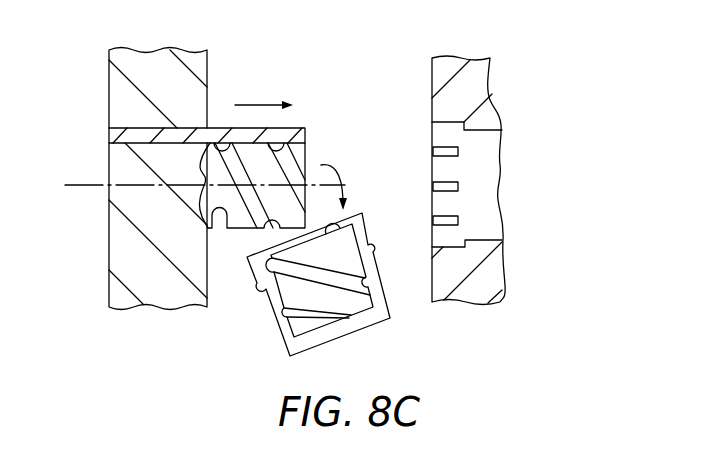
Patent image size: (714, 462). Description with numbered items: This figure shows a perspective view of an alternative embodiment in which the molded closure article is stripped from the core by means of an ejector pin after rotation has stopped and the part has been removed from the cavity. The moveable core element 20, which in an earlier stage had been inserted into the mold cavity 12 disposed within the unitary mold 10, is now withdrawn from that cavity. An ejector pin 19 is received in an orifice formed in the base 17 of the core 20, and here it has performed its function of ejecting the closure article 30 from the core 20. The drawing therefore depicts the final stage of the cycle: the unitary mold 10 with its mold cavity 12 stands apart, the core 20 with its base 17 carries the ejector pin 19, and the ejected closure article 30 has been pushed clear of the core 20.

The unitary mold 10 is at (504, 96).
The mold cavity 12 is at (480, 217).
The base of the core 17 is at (109, 100).
The ejector pin 19 is at (110, 133).
The moveable core element 20 is at (106, 211).
The closure article 30 is at (273, 313).